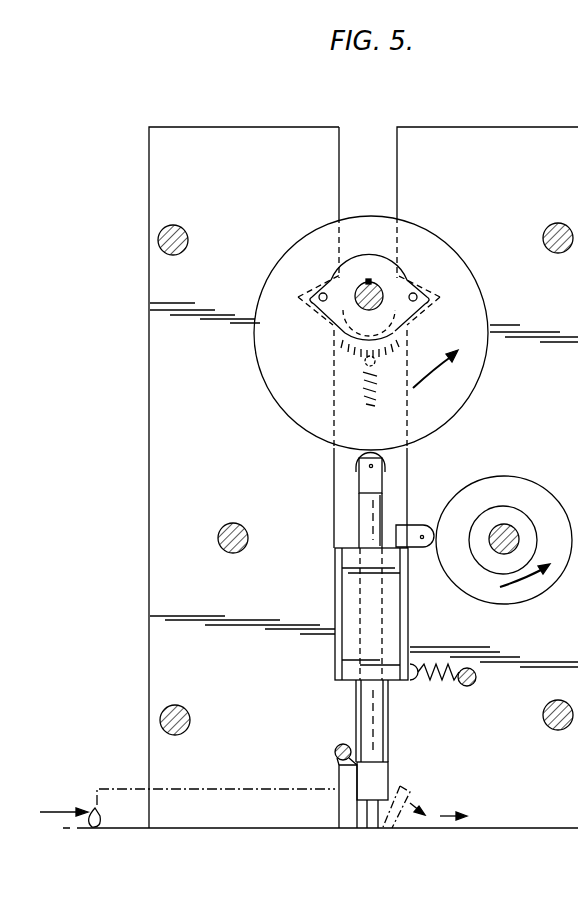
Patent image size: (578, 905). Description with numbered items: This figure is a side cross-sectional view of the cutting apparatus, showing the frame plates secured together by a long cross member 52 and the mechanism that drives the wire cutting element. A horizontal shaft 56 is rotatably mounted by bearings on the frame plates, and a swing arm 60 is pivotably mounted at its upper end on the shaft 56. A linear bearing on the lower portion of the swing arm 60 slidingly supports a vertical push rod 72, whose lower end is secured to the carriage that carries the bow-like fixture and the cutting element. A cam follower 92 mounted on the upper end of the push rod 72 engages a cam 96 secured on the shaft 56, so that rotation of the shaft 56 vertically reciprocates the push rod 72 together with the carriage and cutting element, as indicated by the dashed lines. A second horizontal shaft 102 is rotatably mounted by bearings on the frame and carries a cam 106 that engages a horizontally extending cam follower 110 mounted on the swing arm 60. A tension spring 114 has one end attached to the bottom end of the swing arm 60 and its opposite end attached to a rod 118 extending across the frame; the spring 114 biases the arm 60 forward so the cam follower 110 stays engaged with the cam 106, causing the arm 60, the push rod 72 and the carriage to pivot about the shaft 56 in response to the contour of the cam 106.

The long cross member 52 is at (190, 721).
The horizontal shaft 56 is at (378, 290).
The swing arm 60 is at (341, 515).
The vertical push rod 72 is at (372, 727).
The cam follower 92 is at (365, 455).
The cam 96 is at (453, 404).
The horizontal shaft 102 is at (500, 550).
The cam 106 is at (528, 496).
The cam follower 110 is at (418, 530).
The tension spring 114 is at (447, 672).
The rod 118 is at (476, 677).